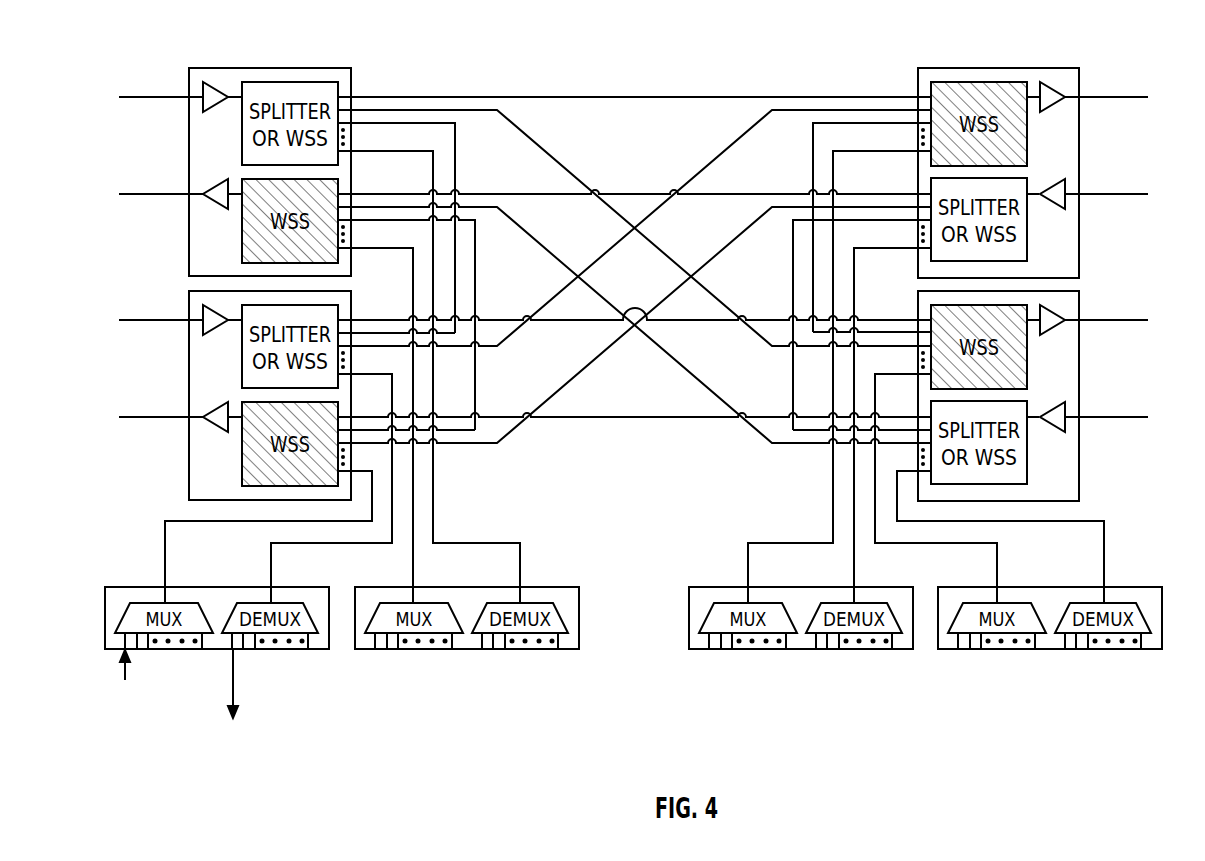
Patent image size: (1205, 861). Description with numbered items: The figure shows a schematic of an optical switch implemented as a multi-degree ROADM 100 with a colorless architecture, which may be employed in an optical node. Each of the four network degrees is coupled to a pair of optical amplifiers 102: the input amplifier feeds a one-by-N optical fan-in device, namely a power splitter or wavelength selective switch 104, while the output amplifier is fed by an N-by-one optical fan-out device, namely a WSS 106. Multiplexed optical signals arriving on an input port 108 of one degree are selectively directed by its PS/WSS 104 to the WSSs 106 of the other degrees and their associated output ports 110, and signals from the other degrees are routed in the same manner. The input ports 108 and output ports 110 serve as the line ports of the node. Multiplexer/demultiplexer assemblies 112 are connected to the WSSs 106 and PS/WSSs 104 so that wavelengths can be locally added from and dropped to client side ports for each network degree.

The ROADM 100 is at (1068, 32).
The optical amplifier 102 is at (204, 88).
The power splitter or wavelength selective switch 104 is at (242, 143).
The WSS 106 is at (242, 218).
The input port 108 is at (130, 320).
The output port 110 is at (112, 433).
The multiplexer/demultiplexer assembly 112 is at (1050, 650).